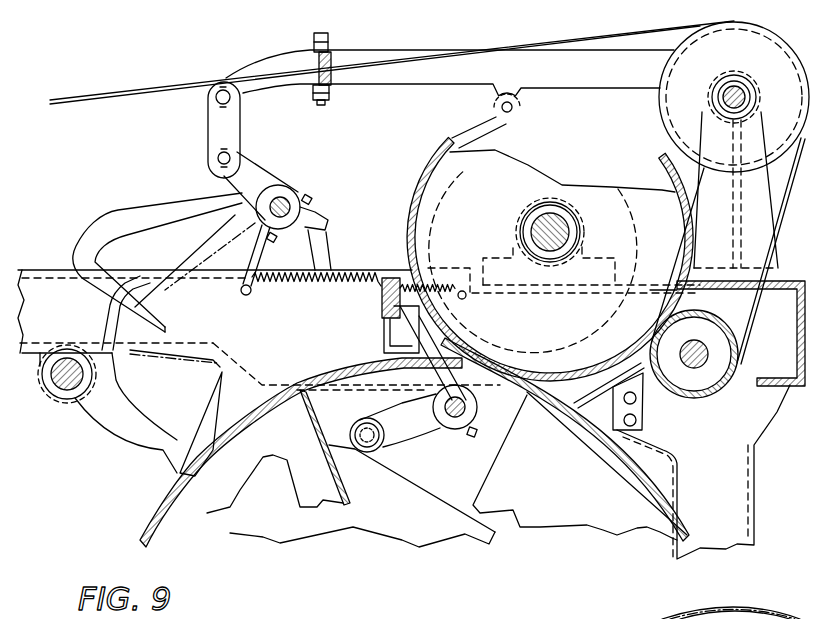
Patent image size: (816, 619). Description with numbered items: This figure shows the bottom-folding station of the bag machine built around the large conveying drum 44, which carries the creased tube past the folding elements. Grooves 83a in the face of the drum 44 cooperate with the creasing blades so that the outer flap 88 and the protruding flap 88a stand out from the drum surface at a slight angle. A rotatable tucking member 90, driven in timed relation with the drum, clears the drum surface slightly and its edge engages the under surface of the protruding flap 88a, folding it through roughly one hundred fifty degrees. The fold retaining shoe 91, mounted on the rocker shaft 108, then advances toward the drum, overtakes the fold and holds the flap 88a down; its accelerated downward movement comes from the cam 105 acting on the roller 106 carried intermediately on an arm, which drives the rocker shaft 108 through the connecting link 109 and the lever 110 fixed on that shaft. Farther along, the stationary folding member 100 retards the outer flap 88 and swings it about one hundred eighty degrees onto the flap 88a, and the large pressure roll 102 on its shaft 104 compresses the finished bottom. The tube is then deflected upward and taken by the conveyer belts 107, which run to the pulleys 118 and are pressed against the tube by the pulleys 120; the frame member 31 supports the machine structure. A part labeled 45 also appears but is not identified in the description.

The frame member 31 is at (734, 497).
The conveying drum 44 is at (623, 519).
The link 45 is at (431, 340).
The grooves 83a is at (210, 452).
The outer flap 88 is at (277, 480).
The protruding flap 88a is at (213, 390).
The rotatable tucking member 90 is at (110, 430).
The fold retaining shoe 91 is at (128, 212).
The stationary folding member 100 is at (382, 326).
The pressure roll 102 is at (419, 170).
The pressure roll shaft 104 is at (531, 232).
The cam 105 is at (507, 135).
The roller 106 is at (520, 102).
The conveyer belts 107 is at (358, 63).
The rocker shaft 108 is at (318, 163).
The connecting link 109 is at (216, 126).
The lever 110 is at (213, 173).
The pulleys 118 is at (734, 145).
The pulleys 120 is at (768, 390).